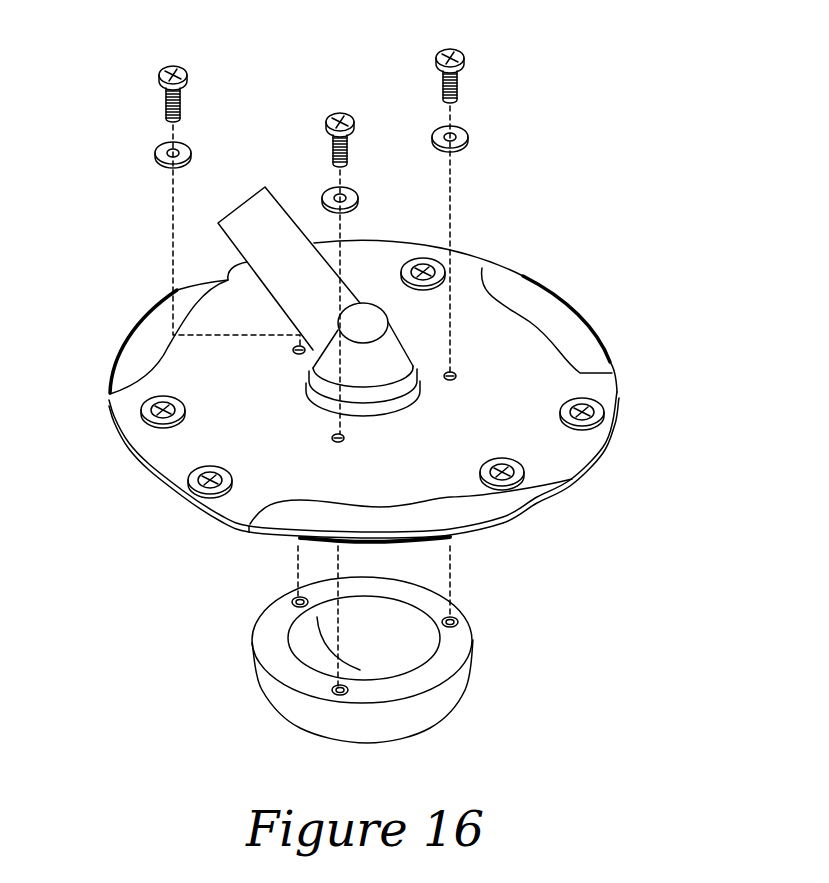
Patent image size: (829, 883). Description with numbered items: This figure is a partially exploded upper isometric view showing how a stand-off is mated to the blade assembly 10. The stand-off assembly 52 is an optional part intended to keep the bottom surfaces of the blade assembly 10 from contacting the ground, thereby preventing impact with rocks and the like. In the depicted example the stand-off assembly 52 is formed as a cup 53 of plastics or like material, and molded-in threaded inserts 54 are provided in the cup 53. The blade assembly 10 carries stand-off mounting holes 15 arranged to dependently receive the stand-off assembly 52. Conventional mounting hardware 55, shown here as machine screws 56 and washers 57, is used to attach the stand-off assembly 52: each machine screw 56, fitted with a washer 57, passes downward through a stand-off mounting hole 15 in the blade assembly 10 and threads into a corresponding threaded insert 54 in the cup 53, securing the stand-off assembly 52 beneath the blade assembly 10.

The blade assembly 10 is at (588, 228).
The stand-off mounting holes 15 is at (295, 351).
The stand-off assembly 52 is at (172, 654).
The cup 53 is at (432, 710).
The molded-in threaded inserts 54 is at (294, 600).
The mounting hardware 55 is at (527, 65).
The machine screws 56 is at (164, 100).
The washers 57 is at (191, 150).